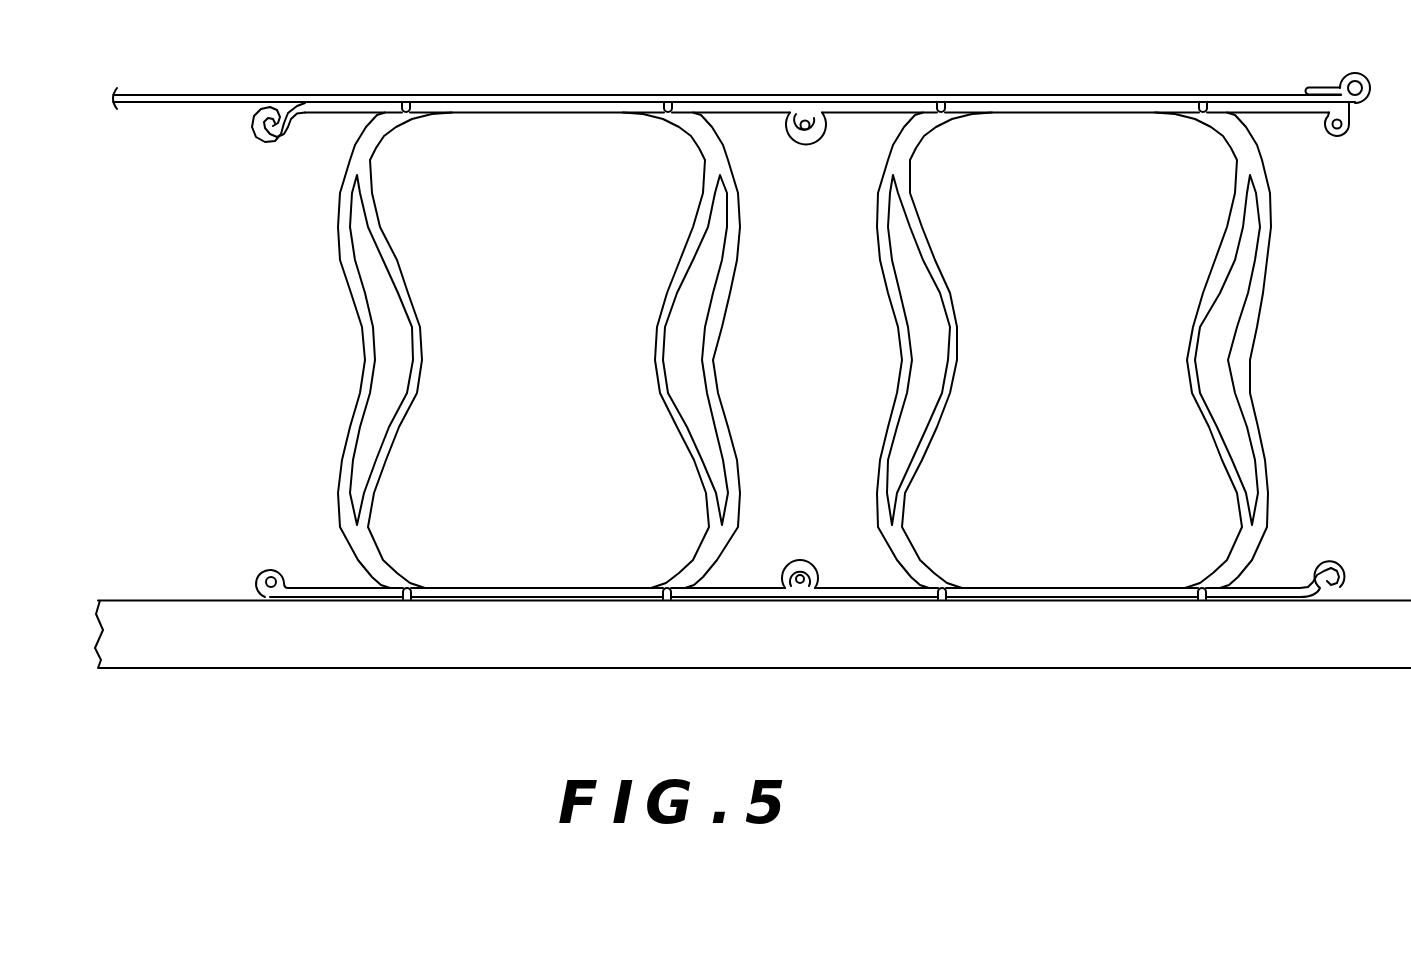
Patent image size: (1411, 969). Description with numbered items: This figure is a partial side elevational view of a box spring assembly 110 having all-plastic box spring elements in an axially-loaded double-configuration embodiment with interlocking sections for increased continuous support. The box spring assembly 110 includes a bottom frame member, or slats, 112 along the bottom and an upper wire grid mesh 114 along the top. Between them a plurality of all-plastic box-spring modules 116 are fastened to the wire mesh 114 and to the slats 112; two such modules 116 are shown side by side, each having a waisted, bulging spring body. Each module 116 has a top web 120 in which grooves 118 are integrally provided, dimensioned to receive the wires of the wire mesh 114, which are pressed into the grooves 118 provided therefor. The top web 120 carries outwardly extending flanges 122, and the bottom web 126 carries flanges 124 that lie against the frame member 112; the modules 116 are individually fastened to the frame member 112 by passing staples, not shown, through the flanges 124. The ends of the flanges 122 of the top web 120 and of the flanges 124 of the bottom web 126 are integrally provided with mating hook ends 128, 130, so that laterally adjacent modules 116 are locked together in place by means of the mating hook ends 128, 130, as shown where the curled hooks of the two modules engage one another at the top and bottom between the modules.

The box spring assembly 110 is at (500, 708).
The bottom frame member (slats) 112 is at (652, 640).
The upper wire grid mesh 114 is at (1292, 94).
The all-plastic box-spring module 116 is at (328, 238).
The groove 118 is at (407, 100).
The top web 120 is at (518, 100).
The flange of the top web 122 is at (317, 110).
The flange of the bottom web 124 is at (312, 588).
The bottom web 126 is at (519, 590).
The mating hook end 128 is at (250, 125).
The mating hook end 130 is at (272, 576).